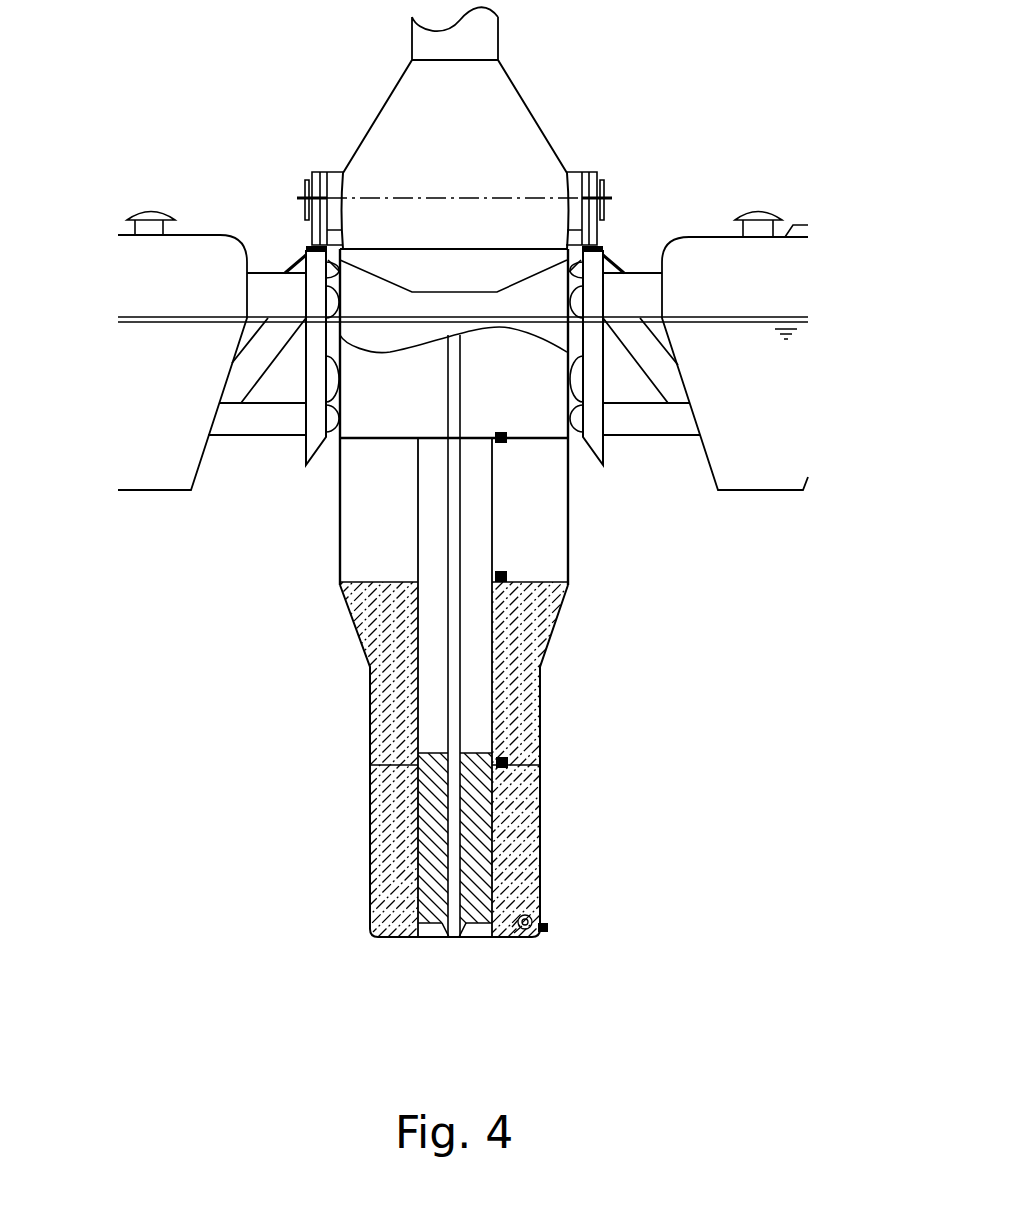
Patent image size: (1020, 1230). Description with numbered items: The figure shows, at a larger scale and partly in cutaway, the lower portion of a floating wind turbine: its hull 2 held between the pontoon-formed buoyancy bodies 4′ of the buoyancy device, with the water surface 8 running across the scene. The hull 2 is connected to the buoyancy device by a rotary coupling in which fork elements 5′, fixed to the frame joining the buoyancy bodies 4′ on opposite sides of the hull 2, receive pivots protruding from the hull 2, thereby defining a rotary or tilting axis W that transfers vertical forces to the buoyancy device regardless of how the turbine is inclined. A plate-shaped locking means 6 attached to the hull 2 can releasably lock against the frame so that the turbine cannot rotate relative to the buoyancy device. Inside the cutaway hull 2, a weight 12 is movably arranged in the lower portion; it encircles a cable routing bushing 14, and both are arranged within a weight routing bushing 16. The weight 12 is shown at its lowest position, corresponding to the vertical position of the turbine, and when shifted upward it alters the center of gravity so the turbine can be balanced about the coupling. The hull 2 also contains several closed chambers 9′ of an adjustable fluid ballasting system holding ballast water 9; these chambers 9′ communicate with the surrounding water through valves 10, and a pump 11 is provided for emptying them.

The hull 2 is at (340, 556).
The buoyancy body 4′ is at (202, 235).
The fork element 5′ is at (603, 233).
The locking means 6 is at (480, 255).
The water surface 8 is at (787, 317).
The ballast water 9 is at (528, 840).
The closed chamber 9′ is at (516, 438).
The valve 10 is at (495, 440).
The pump 11 is at (522, 930).
The weight 12 is at (437, 847).
The cable routing bushing 14 is at (455, 662).
The weight routing bushing 16 is at (492, 718).
The rotary or tilting axis W is at (297, 198).